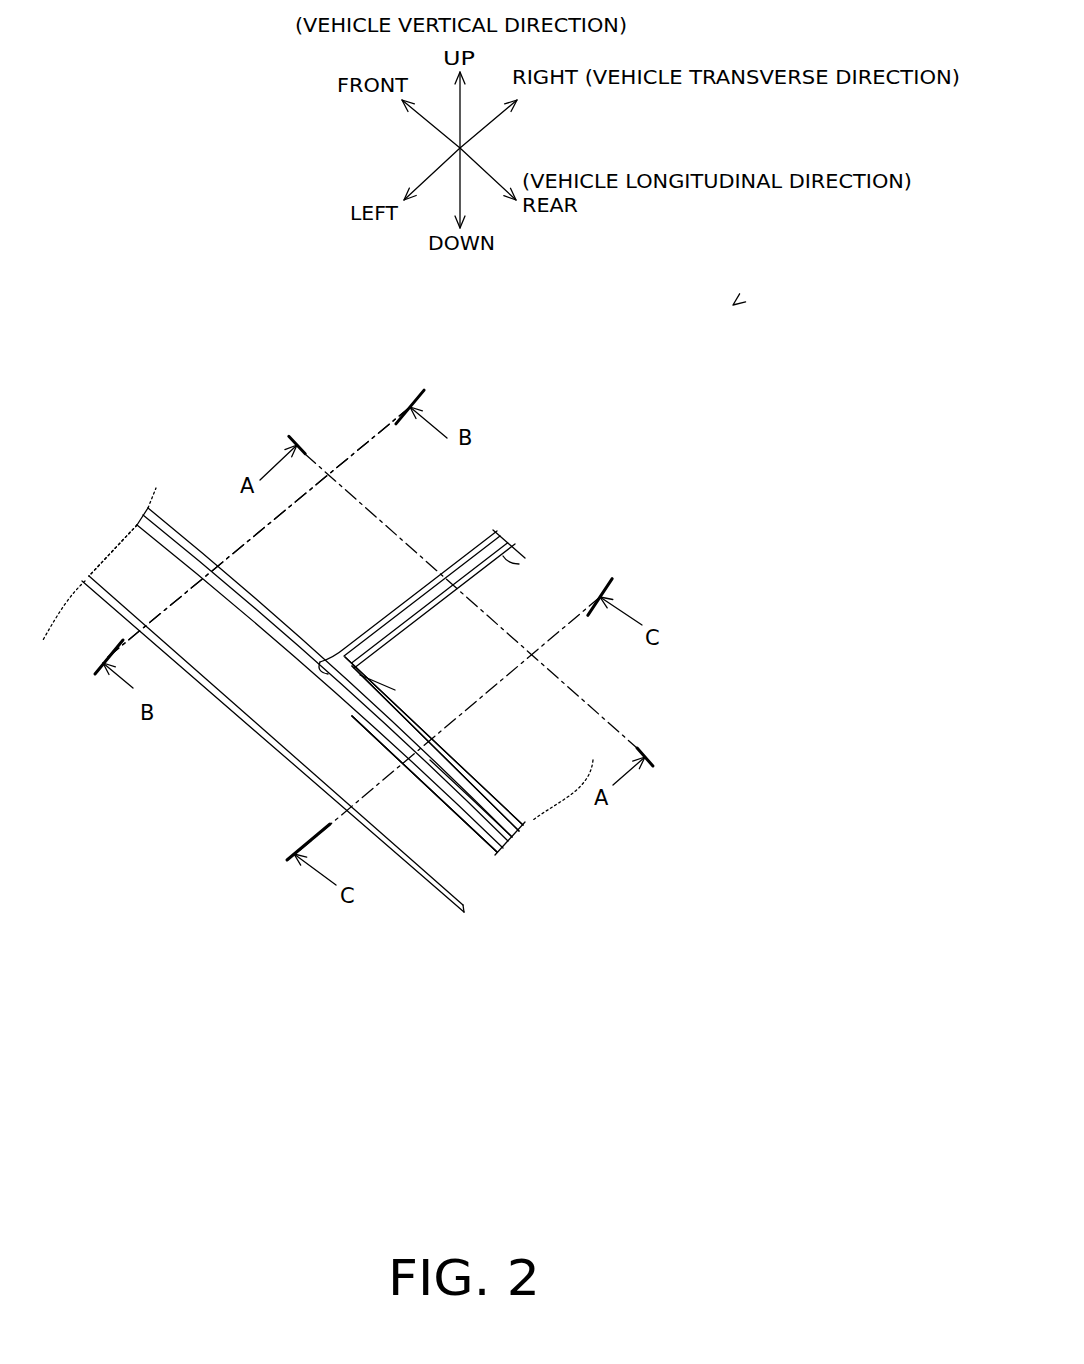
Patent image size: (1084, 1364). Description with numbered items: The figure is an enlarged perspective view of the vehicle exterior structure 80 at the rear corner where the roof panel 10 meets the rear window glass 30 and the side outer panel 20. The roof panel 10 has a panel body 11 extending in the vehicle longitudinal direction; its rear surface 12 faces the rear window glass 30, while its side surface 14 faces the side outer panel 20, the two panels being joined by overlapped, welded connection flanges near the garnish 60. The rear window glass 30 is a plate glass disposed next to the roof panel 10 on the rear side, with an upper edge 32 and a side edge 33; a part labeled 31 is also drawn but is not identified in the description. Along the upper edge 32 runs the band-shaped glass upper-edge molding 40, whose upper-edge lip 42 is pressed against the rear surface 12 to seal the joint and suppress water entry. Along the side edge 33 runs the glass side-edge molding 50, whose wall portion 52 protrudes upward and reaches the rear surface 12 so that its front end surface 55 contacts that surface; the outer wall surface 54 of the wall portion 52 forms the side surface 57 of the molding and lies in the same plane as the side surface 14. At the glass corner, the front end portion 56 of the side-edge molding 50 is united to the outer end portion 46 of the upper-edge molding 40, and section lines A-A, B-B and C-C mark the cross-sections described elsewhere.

The roof panel 10 is at (562, 591).
The panel body 11 is at (329, 447).
The rear surface 12 is at (500, 537).
The side surface 14 is at (177, 533).
The side outer panel 20 is at (418, 915).
The rear window glass 30 is at (522, 598).
The pillar inner panel body 31 is at (596, 677).
The upper edge 32 is at (520, 555).
The side edge 33 is at (503, 793).
The glass upper-edge molding 40 is at (512, 548).
The upper-edge lip 42 is at (505, 540).
The end portion 46 is at (383, 667).
The glass side-edge molding 50 is at (525, 838).
The wall portion 52 is at (335, 707).
The wall surface 54 is at (508, 852).
The end surface 55 is at (300, 678).
The end portion 56 is at (387, 687).
The side surface 57 is at (508, 852).
The garnish 60 is at (107, 545).
The vehicle exterior structure 80 is at (733, 305).